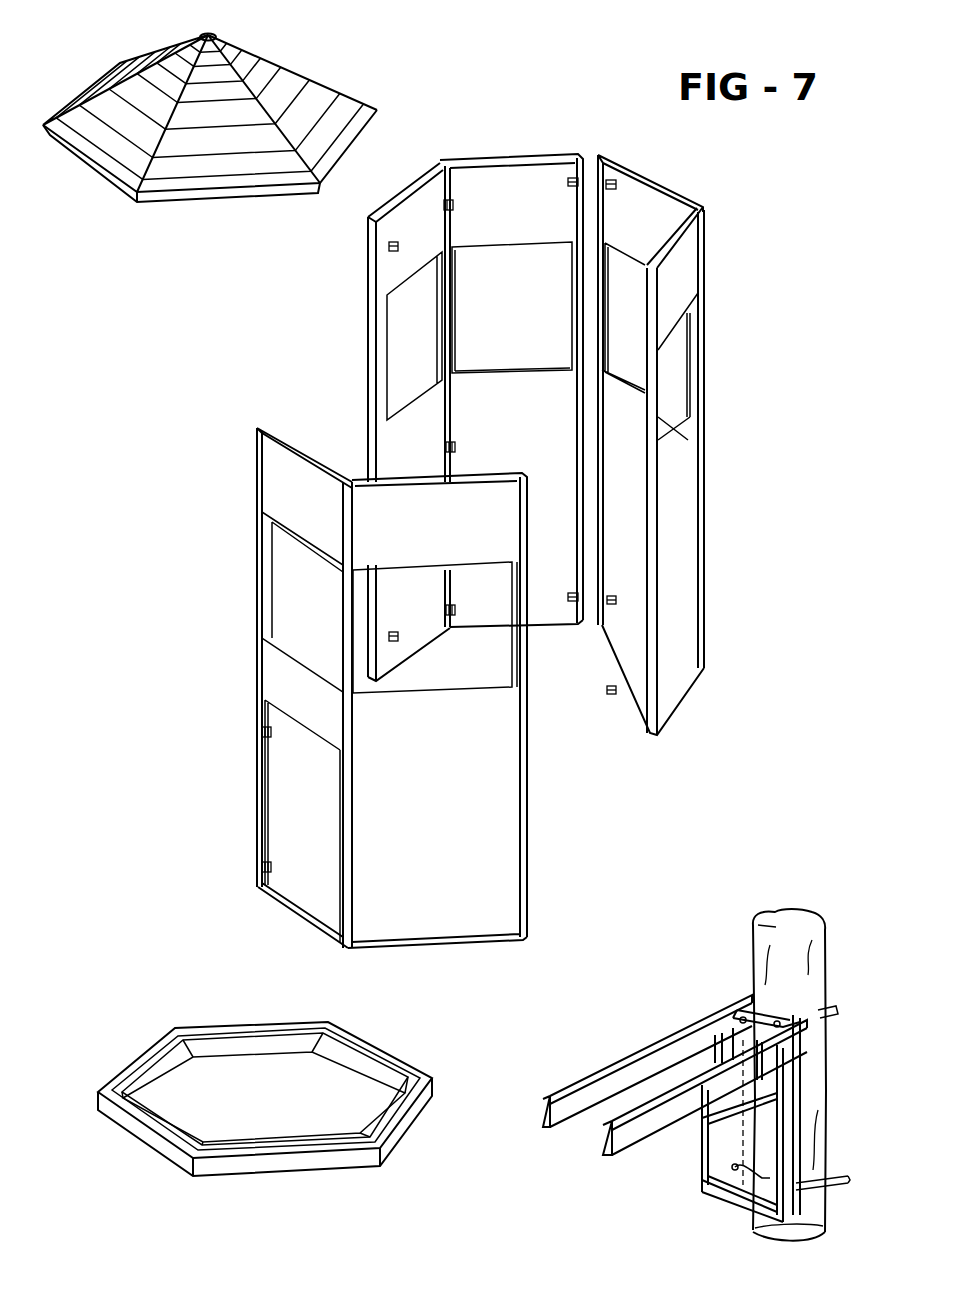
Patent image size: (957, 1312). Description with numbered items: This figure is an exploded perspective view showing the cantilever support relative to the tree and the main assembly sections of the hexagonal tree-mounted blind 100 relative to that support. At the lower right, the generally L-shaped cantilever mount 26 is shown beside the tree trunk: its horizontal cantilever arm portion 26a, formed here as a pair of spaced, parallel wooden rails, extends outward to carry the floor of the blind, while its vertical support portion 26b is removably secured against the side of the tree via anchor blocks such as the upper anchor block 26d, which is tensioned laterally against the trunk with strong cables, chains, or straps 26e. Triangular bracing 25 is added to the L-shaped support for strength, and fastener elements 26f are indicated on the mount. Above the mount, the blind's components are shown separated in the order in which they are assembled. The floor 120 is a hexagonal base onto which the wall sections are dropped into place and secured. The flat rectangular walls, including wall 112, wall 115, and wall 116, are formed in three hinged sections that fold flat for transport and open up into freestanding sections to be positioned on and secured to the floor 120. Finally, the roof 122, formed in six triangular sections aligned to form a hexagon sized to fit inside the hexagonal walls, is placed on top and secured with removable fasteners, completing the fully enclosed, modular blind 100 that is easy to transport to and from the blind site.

The tree-mounted blind 100 is at (804, 256).
The roof 122 is at (317, 92).
The wall 112 is at (270, 470).
The wall 115 is at (453, 795).
The wall 116 is at (694, 605).
The floor 120 is at (197, 1085).
The triangular bracing 25 is at (756, 1130).
The cantilever mount 26 is at (716, 1104).
The horizontal cantilever arm portion 26a is at (607, 1087).
The vertical support portion 26b is at (795, 1090).
The upper anchor block 26d is at (793, 1028).
The straps 26e is at (827, 1013).
The fastener hook 26f is at (743, 1020).